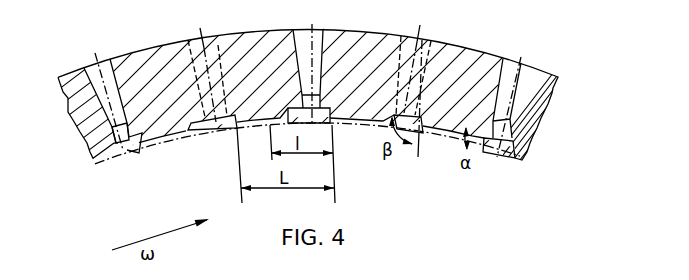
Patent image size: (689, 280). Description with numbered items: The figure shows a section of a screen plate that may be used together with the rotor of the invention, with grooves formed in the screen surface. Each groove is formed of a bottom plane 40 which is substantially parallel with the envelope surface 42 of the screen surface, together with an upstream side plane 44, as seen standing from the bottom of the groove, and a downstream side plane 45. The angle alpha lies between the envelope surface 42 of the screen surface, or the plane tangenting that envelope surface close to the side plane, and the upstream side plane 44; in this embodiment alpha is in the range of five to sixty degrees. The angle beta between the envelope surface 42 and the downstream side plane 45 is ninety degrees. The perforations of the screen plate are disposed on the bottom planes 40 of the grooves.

The bottom plane 40 is at (116, 152).
The envelope surface 42 is at (113, 152).
The upstream side plane 44 is at (185, 131).
The downstream side plane 45 is at (142, 137).